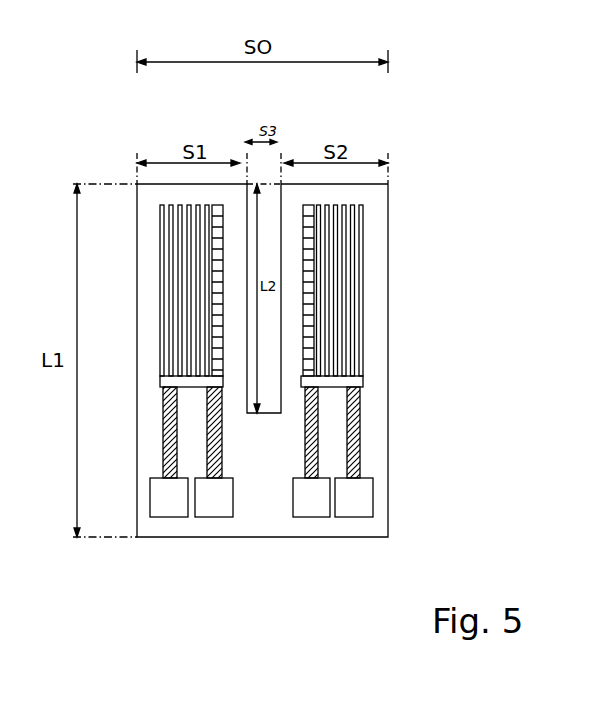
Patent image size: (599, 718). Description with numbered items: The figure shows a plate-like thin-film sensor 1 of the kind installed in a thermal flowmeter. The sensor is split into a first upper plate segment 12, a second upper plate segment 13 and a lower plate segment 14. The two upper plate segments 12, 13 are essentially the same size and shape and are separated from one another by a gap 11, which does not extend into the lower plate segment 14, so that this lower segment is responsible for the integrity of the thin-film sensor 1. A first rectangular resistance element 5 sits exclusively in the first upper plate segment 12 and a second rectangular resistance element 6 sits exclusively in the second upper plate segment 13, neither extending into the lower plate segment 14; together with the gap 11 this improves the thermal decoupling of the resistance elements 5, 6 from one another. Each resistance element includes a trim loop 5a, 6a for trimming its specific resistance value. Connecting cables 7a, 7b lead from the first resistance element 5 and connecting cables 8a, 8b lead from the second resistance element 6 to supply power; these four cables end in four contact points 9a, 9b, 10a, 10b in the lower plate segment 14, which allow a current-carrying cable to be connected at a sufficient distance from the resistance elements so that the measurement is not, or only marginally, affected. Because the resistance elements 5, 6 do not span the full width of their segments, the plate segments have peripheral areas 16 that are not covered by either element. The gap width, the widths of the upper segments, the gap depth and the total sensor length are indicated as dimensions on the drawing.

The thin-film sensor 1 is at (112, 169).
The resistance element 5 is at (158, 322).
The trim loop 5a is at (216, 206).
The resistance element 6 is at (363, 322).
The trim loop 6a is at (311, 205).
The connecting cable 7a is at (165, 425).
The connecting cable 7b is at (208, 457).
The connecting cable 8a is at (357, 425).
The connecting cable 8b is at (318, 457).
The contact point 9a is at (172, 510).
The contact point 9b is at (220, 510).
The contact point 10a is at (312, 510).
The contact point 10b is at (358, 510).
The gap 11 is at (290, 128).
The first upper plate segment 12 is at (238, 128).
The second upper plate segment 13 is at (393, 128).
The lower plate segment 14 is at (452, 422).
The peripheral area 16 is at (378, 275).